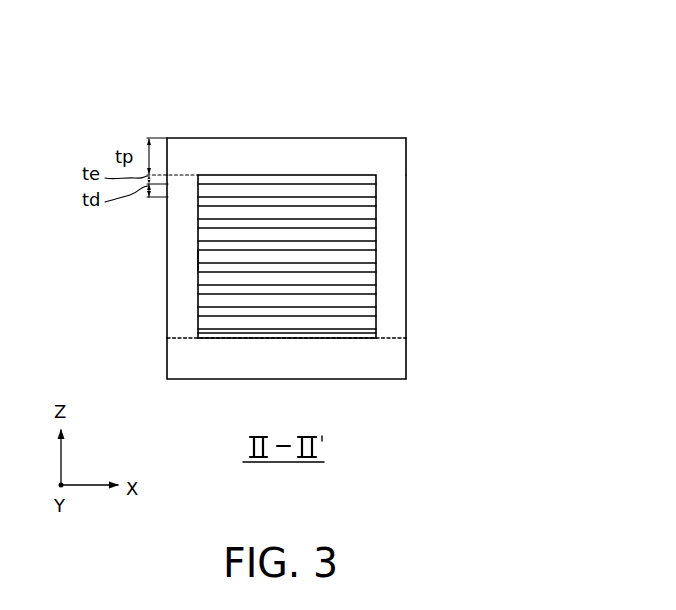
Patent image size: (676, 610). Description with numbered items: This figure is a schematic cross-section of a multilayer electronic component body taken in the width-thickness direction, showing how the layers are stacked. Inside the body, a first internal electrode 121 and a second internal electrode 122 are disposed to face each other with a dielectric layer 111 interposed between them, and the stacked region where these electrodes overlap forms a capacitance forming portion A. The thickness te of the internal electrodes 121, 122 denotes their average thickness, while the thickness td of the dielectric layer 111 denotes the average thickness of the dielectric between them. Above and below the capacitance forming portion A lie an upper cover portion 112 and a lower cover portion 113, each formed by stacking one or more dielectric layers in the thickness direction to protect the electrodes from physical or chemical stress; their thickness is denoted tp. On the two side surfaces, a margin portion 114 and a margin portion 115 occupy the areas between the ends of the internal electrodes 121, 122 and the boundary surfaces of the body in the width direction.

The dielectric layer 111 is at (374, 187).
The upper cover portion 112 is at (291, 157).
The lower cover portion 113 is at (398, 356).
The margin portion 114 is at (184, 296).
The margin portion 115 is at (398, 282).
The first internal electrode 121 is at (374, 176).
The second internal electrode 122 is at (374, 200).
The capacitance forming portion A is at (196, 260).